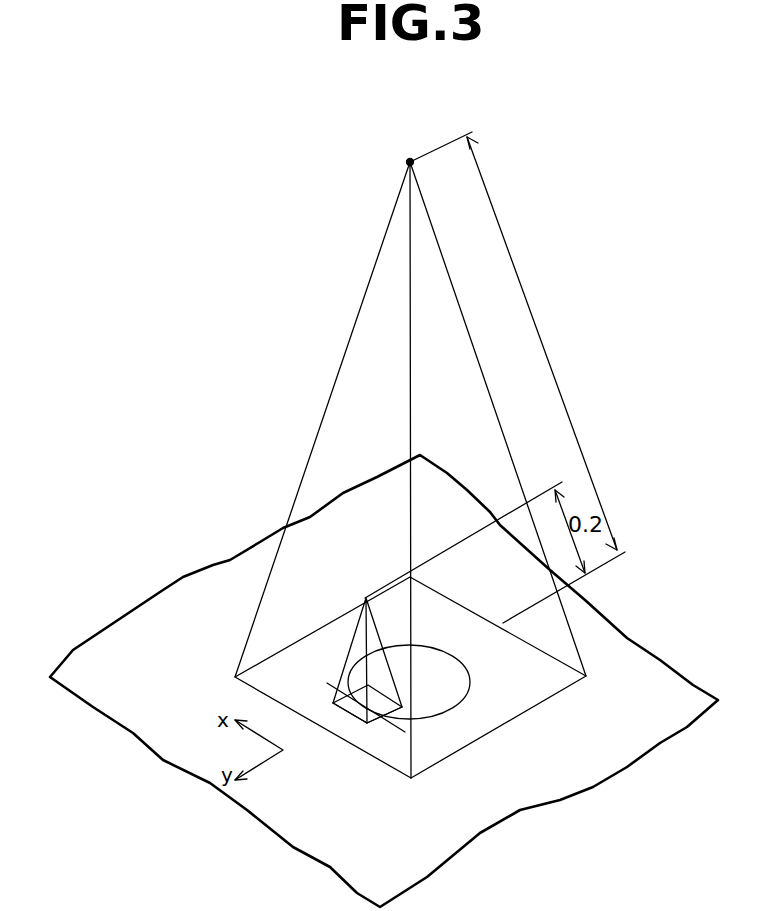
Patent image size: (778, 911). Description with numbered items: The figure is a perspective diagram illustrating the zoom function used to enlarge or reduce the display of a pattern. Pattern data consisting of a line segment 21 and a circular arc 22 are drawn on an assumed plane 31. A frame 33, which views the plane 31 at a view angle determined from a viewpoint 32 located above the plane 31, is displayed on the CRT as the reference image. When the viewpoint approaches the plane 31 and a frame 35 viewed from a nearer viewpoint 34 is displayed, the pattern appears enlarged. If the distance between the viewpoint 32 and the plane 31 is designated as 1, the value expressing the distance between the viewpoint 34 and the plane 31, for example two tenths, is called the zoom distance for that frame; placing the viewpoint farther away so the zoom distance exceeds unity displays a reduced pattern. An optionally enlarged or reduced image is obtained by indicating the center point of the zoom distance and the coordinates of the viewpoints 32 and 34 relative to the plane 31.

The reference distance 1 is at (517, 377).
The line segment 21 is at (388, 720).
The circular arc 22 is at (472, 687).
The assumed plane 31 is at (97, 648).
The viewpoint 32 is at (410, 162).
The frame 33 is at (250, 685).
The viewpoint 34 is at (365, 598).
The frame 35 is at (333, 703).